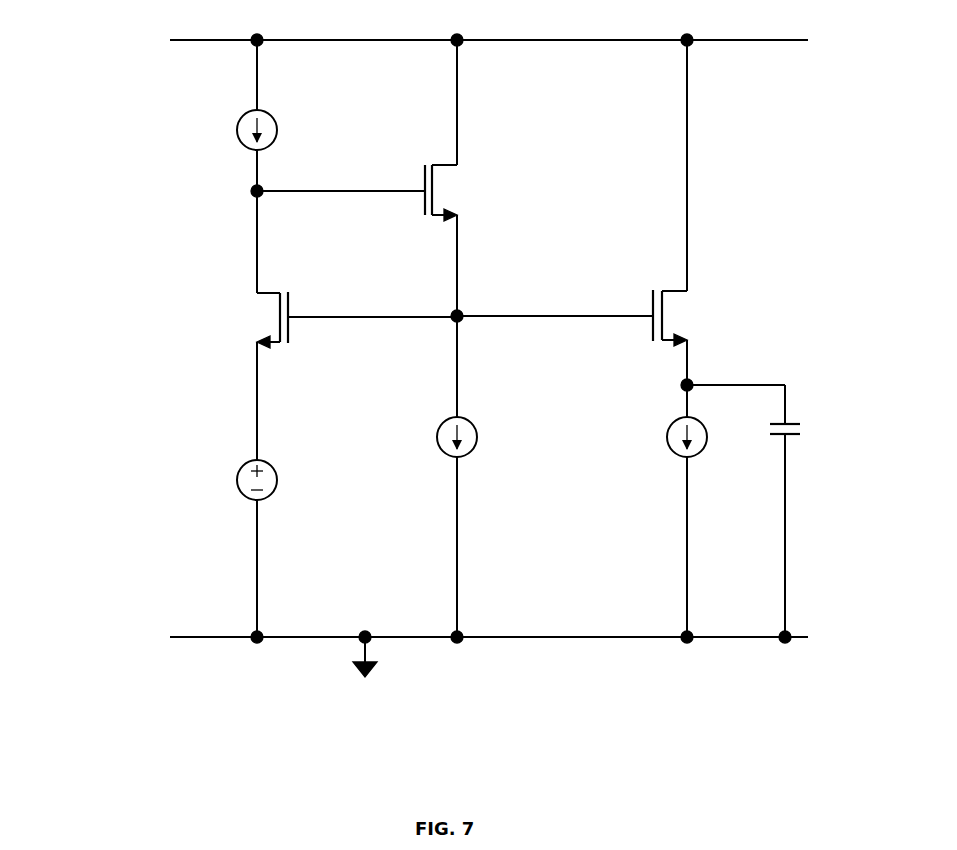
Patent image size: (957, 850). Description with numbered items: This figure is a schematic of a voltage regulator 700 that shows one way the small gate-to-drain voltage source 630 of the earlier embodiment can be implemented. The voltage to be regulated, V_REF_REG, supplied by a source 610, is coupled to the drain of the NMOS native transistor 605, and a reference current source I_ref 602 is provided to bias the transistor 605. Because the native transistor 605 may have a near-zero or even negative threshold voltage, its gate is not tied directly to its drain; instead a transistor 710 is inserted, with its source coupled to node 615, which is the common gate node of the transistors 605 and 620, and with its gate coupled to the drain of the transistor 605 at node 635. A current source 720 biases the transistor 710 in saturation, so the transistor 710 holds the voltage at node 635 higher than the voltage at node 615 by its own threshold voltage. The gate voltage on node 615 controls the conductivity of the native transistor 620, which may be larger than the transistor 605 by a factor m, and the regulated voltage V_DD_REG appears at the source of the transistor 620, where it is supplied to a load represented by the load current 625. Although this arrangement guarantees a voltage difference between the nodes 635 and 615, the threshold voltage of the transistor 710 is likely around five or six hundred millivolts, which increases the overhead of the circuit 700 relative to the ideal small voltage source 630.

The voltage regulator 700 is at (98, 494).
The current source I_ref 602 is at (292, 130).
The node 635 is at (250, 191).
The transistor 710 is at (453, 192).
The NMOS native transistor 605 is at (295, 324).
The node 615 is at (481, 330).
The NMOS native transistor 620 is at (649, 323).
The reference voltage source VREF_REG 610 is at (311, 470).
The current source 720 is at (417, 430).
The load current 625 is at (664, 446).
The voltage source 630 is at (813, 447).